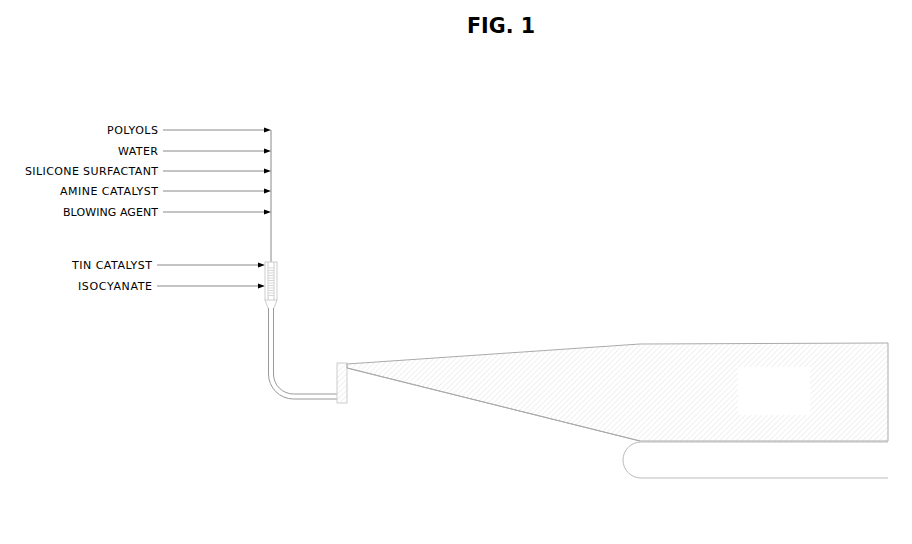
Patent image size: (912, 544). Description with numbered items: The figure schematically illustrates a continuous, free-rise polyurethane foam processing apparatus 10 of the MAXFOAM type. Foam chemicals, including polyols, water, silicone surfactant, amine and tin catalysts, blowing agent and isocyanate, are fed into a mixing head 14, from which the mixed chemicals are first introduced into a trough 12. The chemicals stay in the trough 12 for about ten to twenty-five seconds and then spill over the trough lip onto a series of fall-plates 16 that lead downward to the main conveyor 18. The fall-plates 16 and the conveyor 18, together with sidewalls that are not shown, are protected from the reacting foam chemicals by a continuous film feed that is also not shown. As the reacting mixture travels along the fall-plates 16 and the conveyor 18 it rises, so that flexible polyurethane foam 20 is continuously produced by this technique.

The foam production system 10 is at (524, 266).
The trough 12 is at (358, 391).
The mixing head 14 is at (288, 261).
The fall-plates 16 is at (578, 437).
The main conveyor 18 is at (745, 486).
The flexible polyurethane foam 20 is at (617, 384).